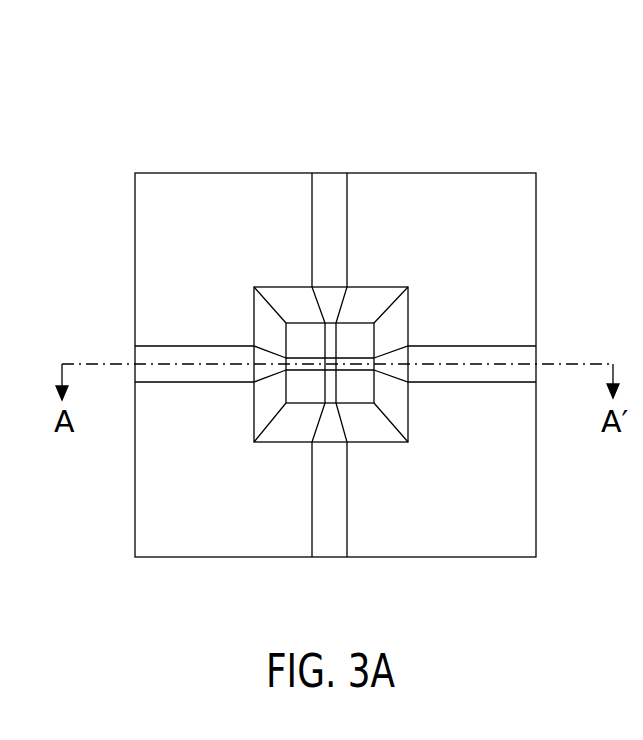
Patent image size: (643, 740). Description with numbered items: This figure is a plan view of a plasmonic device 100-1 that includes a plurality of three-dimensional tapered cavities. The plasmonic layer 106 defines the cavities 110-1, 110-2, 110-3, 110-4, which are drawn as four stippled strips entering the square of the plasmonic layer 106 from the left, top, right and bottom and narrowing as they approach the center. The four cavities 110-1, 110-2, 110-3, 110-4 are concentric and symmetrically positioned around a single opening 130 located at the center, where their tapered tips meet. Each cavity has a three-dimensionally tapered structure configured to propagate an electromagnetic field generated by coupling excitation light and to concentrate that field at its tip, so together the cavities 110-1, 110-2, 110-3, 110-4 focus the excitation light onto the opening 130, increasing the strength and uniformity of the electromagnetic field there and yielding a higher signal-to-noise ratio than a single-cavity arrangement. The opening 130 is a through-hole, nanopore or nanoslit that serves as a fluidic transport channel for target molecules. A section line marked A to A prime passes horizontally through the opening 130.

The plasmonic device 100-1 is at (178, 87).
The plasmonic layer 106 is at (520, 202).
The cavity 110-1 is at (150, 356).
The cavity 110-2 is at (338, 178).
The cavity 110-3 is at (518, 352).
The cavity 110-4 is at (332, 550).
The opening 130 is at (333, 362).